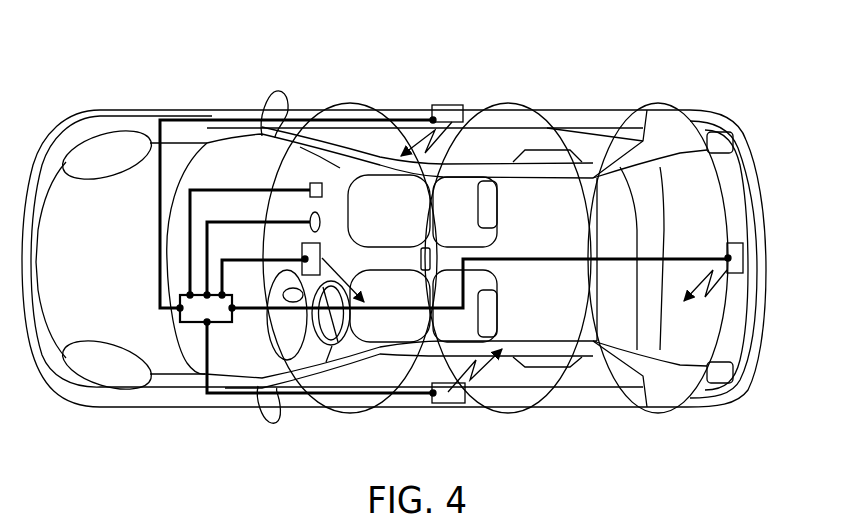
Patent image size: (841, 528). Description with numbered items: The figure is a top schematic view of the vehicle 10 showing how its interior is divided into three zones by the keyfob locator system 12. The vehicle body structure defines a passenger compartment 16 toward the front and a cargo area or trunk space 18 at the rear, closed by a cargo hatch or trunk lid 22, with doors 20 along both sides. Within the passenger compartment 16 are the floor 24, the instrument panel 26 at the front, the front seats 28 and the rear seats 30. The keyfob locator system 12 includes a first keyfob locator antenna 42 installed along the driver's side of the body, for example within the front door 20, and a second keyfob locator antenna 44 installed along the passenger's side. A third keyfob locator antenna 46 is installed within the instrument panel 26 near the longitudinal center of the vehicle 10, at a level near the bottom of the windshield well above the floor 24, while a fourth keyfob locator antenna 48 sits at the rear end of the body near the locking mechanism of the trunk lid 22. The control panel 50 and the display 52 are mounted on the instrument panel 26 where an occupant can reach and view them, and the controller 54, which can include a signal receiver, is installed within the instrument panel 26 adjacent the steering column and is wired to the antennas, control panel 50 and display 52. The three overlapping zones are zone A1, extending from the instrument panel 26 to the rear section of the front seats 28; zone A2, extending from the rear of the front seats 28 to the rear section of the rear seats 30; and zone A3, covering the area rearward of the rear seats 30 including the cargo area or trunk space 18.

The vehicle 10 is at (184, 69).
The keyfob locator system 12 is at (195, 333).
The passenger compartment 16 is at (388, 257).
The cargo area or trunk space 18 is at (693, 197).
The doors 20 is at (370, 120).
The cargo hatch or trunk lid 22 is at (727, 180).
The floor 24 is at (337, 180).
The instrument panel 26 is at (320, 170).
The front seats 28 is at (383, 203).
The rear seats 30 is at (552, 207).
The first keyfob locator antenna 42 is at (443, 404).
The second keyfob locator antenna 44 is at (460, 105).
The third keyfob locator antenna 46 is at (300, 248).
The fourth keyfob locator antenna 48 is at (736, 252).
The control panel 50 is at (308, 185).
The display 52 is at (308, 215).
The controller 54 is at (192, 312).
The zone A1 is at (343, 413).
The zone A2 is at (508, 414).
The zone A3 is at (672, 413).